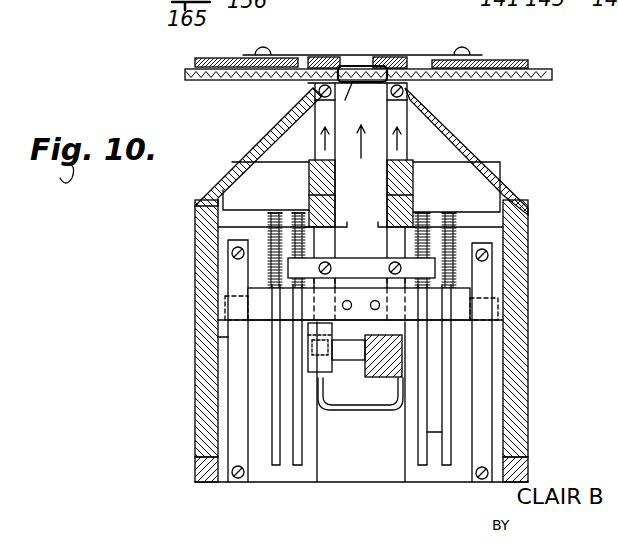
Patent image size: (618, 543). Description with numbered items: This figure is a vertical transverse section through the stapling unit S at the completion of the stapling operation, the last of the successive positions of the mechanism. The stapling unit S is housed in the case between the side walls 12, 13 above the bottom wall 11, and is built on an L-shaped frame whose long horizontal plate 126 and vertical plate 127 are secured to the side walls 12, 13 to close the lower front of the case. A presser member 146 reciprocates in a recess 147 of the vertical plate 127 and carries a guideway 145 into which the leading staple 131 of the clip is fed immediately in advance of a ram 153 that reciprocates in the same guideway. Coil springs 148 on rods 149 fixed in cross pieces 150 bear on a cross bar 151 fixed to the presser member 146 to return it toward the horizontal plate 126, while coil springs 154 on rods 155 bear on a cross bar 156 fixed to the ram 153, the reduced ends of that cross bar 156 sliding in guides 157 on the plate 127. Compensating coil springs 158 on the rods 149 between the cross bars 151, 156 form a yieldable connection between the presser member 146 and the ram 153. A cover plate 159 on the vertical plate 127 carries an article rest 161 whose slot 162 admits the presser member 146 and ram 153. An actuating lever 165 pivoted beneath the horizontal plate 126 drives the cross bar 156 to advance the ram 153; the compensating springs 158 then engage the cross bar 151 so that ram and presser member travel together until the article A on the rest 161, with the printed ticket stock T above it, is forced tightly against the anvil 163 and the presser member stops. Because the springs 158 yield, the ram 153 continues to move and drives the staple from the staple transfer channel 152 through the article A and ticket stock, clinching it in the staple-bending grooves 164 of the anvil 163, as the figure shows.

The bottom wall 11 is at (205, 482).
The side wall 12 is at (200, 348).
The side wall 13 is at (513, 355).
The horizontal plate 126 is at (308, 168).
The vertical plate 127 is at (458, 413).
The staple 131 is at (351, 86).
The guideway 145 is at (330, 404).
The presser member 146 is at (400, 150).
The recess 147 is at (327, 460).
The coil spring 148 is at (268, 221).
The rod 149 is at (298, 388).
The cross piece 150 is at (360, 194).
The cross bar 151 is at (353, 268).
The staple transfer channel 152 is at (407, 84).
The ram 153 is at (360, 211).
The coil spring 154 is at (292, 257).
The rod 155 is at (205, 337).
The cross bar 156 is at (262, 292).
The guide 157 is at (235, 370).
The compensating coil spring 158 is at (250, 282).
The cover plate 159 is at (200, 196).
The article rest 161 is at (407, 97).
The slot 162 is at (313, 88).
The anvil 163 is at (425, 57).
The staple-bending groove 164 is at (379, 57).
The actuating lever 165 is at (402, 358).
The article A is at (185, 72).
The tape T is at (320, 58).
The stapling unit S is at (425, 205).